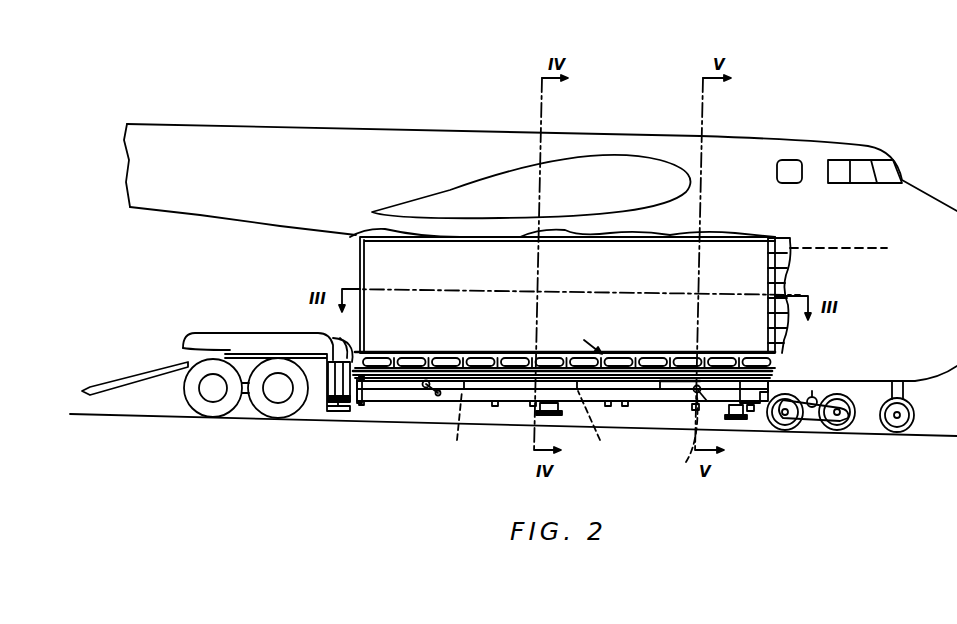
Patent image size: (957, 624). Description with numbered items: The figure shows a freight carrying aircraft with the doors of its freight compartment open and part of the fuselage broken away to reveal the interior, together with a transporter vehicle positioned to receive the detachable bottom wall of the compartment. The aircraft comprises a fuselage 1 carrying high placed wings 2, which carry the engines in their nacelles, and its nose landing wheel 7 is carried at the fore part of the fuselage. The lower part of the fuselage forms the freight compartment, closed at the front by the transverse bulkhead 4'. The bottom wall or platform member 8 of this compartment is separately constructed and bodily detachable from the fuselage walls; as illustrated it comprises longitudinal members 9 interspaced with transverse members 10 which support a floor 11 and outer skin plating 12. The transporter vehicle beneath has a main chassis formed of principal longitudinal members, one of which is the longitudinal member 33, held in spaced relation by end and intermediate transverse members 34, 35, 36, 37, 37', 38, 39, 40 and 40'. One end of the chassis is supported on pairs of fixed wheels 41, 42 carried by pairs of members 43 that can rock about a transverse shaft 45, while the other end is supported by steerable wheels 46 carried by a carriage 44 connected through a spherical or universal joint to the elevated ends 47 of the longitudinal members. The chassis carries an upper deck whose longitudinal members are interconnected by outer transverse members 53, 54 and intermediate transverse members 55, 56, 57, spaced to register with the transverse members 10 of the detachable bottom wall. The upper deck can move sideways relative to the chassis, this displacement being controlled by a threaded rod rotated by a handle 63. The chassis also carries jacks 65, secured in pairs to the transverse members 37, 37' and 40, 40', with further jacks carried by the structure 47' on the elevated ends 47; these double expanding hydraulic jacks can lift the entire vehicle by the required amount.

The fuselage 1 is at (556, 146).
The wings 2 is at (648, 173).
The transverse bulkhead 4' is at (597, 291).
The nose landing wheel 7 is at (902, 386).
The bottom wall member 8 is at (562, 352).
The longitudinal members 9 is at (478, 360).
The transverse members 10 is at (517, 361).
The floor 11 is at (620, 361).
The outer skin plating 12 is at (668, 378).
The principal longitudinal member 33 is at (395, 404).
The transverse member 34 is at (361, 392).
The transverse member 35 is at (432, 398).
The transverse member 36 is at (494, 407).
The transverse member 37 is at (592, 419).
The transverse member 37' is at (520, 429).
The transverse member 38 is at (626, 407).
The transverse member 39 is at (681, 436).
The transverse member 40 is at (761, 429).
The transverse member 40' is at (711, 429).
The fixed wheel 41 is at (783, 431).
The fixed wheel 42 is at (840, 431).
The rocking members 43 is at (820, 407).
The carriage 44 is at (243, 338).
The transverse shaft 45 is at (812, 397).
The steerable wheels 46 is at (290, 409).
The elevated ends 47 is at (156, 339).
The jack-carrying structure 47' is at (329, 339).
The outer transverse member 53 is at (330, 411).
The outer transverse member 54 is at (761, 392).
The intermediate transverse member 55 is at (459, 419).
The intermediate transverse member 56 is at (608, 407).
The intermediate transverse member 57 is at (661, 391).
The handle 63 is at (702, 387).
The jacks 65 is at (345, 412).